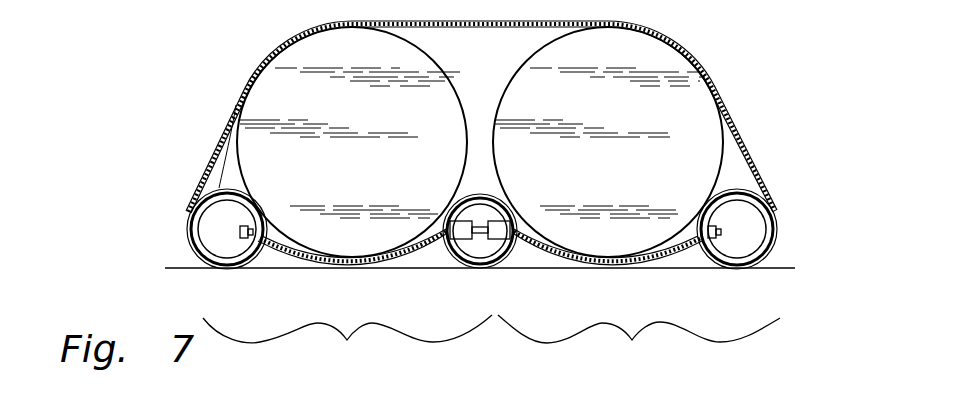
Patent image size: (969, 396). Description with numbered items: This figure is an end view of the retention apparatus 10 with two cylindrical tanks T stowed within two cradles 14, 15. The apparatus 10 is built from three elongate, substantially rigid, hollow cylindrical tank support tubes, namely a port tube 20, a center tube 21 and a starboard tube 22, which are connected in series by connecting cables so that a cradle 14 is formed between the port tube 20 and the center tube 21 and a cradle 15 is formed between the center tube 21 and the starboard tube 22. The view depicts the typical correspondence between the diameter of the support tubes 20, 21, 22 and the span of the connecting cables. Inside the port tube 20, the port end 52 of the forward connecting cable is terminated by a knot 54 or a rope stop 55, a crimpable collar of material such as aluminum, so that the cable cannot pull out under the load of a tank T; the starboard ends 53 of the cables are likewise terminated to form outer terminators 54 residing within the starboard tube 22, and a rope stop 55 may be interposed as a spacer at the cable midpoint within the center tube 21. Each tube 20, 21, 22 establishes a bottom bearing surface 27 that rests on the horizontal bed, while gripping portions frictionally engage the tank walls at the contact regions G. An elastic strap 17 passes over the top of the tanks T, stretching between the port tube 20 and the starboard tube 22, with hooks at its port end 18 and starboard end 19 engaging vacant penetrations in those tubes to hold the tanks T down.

The retention apparatus 10 is at (176, 166).
The cradle 14 is at (347, 340).
The cradle 15 is at (632, 340).
The elastic strap 17 is at (698, 64).
The port end 18 is at (201, 219).
The starboard end 19 is at (762, 218).
The port tube 20 is at (236, 104).
The center tube 21 is at (508, 245).
The starboard tube 22 is at (779, 235).
The bottom bearing surface 27 is at (236, 269).
The port end of the forward connecting cable 52 is at (264, 252).
The starboard ends of the cables 53 is at (692, 262).
The knot 54 is at (241, 232).
The rope stop 55 is at (488, 240).
The tank T is at (420, 52).
The gap G is at (266, 201).